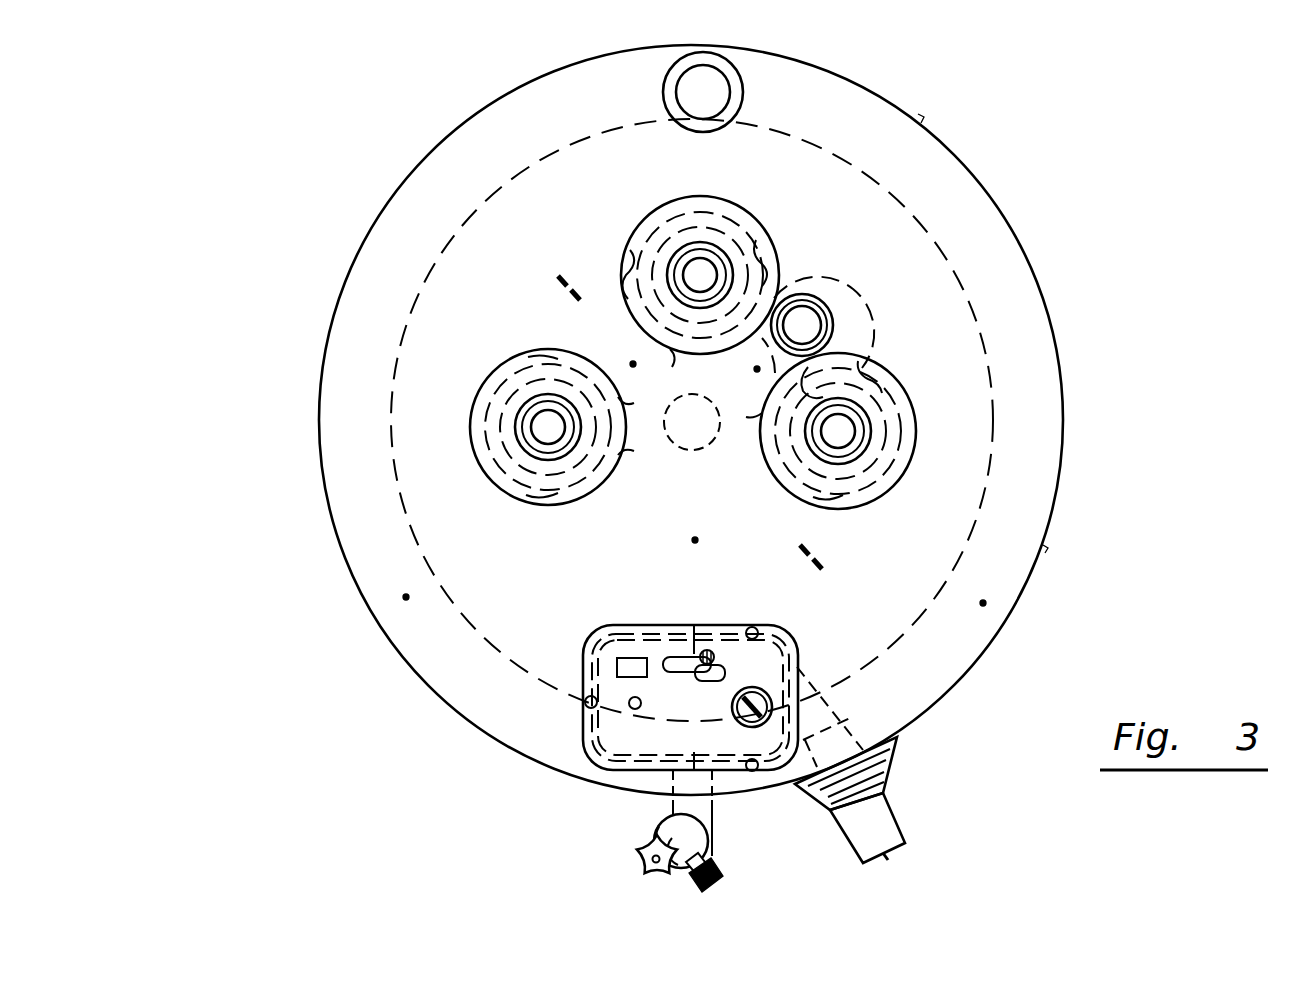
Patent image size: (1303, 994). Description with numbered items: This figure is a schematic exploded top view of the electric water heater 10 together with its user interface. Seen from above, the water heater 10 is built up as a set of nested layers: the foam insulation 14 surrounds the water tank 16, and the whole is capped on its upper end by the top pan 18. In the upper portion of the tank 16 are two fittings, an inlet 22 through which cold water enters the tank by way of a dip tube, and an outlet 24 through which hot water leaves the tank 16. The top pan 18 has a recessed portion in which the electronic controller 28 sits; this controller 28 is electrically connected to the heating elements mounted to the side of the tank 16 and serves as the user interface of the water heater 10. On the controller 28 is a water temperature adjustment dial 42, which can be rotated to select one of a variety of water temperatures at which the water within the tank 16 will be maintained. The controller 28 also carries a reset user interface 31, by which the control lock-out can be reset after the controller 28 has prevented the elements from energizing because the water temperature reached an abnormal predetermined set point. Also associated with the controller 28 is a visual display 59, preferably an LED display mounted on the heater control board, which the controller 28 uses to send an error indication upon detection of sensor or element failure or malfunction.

The water heater 10 is at (292, 558).
The foam insulation 14 is at (370, 426).
The water tank 16 is at (450, 236).
The top pan 18 is at (437, 151).
The inlet 22 is at (860, 420).
The outlet 24 is at (528, 411).
The electronic controller 28 is at (590, 736).
The reset user interface 31 is at (620, 661).
The water temperature adjustment dial 42 is at (755, 722).
The visual display 59 is at (634, 712).